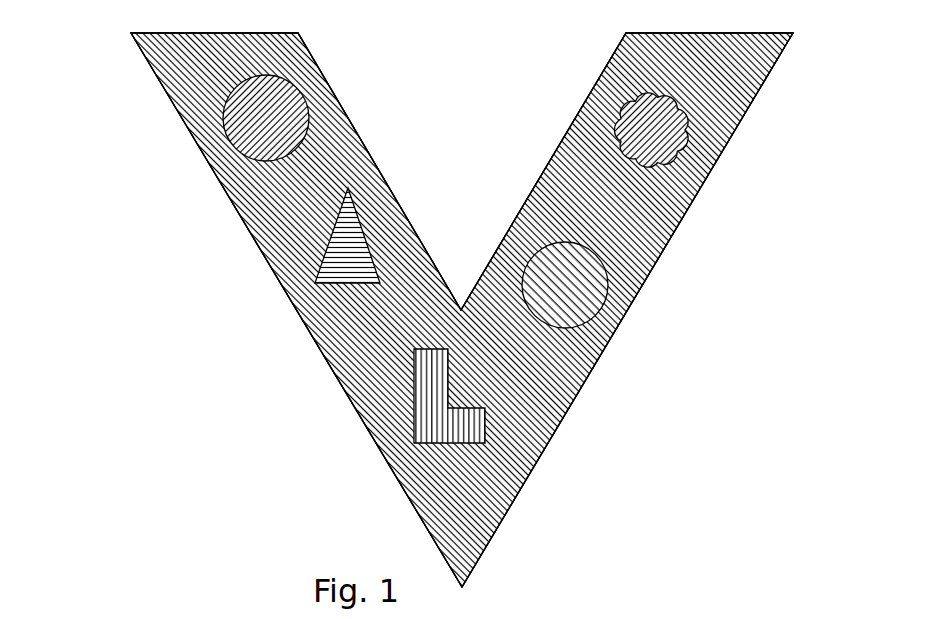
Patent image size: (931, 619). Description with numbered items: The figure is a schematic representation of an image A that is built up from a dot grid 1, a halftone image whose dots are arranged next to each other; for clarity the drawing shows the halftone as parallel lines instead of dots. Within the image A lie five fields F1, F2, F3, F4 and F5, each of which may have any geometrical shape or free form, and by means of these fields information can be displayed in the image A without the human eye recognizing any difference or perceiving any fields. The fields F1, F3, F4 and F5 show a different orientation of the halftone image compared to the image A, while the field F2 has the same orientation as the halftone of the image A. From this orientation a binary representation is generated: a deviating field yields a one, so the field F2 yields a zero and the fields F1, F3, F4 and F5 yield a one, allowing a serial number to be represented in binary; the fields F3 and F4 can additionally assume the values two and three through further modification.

The dot grid 1 is at (727, 123).
The image A is at (745, 112).
The field F1 is at (682, 157).
The field F2 is at (610, 277).
The field F3 is at (488, 415).
The field F4 is at (217, 125).
The field F5 is at (314, 260).